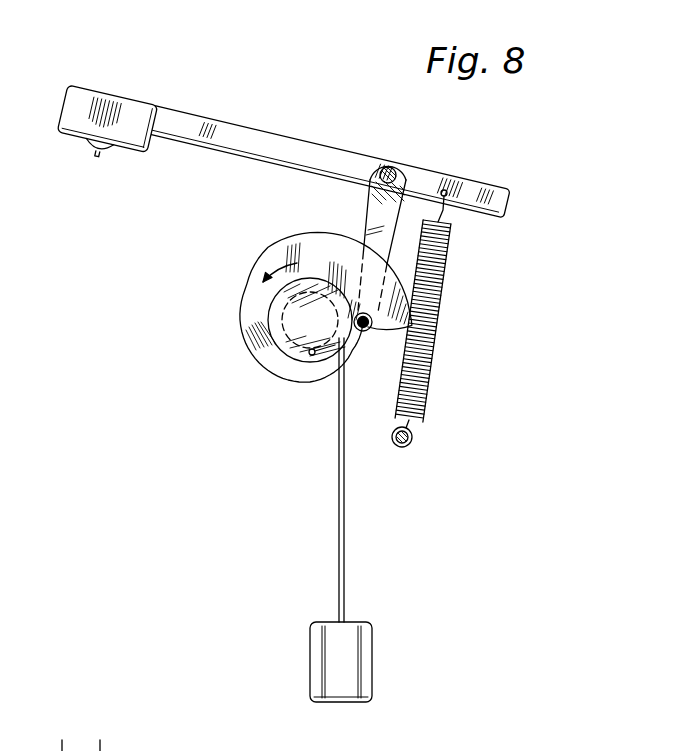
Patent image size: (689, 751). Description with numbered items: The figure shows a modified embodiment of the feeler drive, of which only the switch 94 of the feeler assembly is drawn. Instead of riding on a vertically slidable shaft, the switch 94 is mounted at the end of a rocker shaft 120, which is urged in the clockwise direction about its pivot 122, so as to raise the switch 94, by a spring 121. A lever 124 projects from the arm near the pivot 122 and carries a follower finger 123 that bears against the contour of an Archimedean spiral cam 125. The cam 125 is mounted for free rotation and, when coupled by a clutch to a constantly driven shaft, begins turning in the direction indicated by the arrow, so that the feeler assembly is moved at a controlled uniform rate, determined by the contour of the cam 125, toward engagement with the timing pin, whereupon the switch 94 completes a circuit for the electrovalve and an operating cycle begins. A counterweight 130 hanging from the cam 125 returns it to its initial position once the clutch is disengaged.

The switch 94 is at (78, 122).
The rocker shaft 120 is at (228, 132).
The spring 121 is at (448, 268).
The pivot pin 122 is at (393, 172).
The follower finger 123 is at (364, 331).
The lever 124 is at (372, 215).
The Archimedean spiral cam 125 is at (278, 362).
The counterweight 130 is at (340, 660).